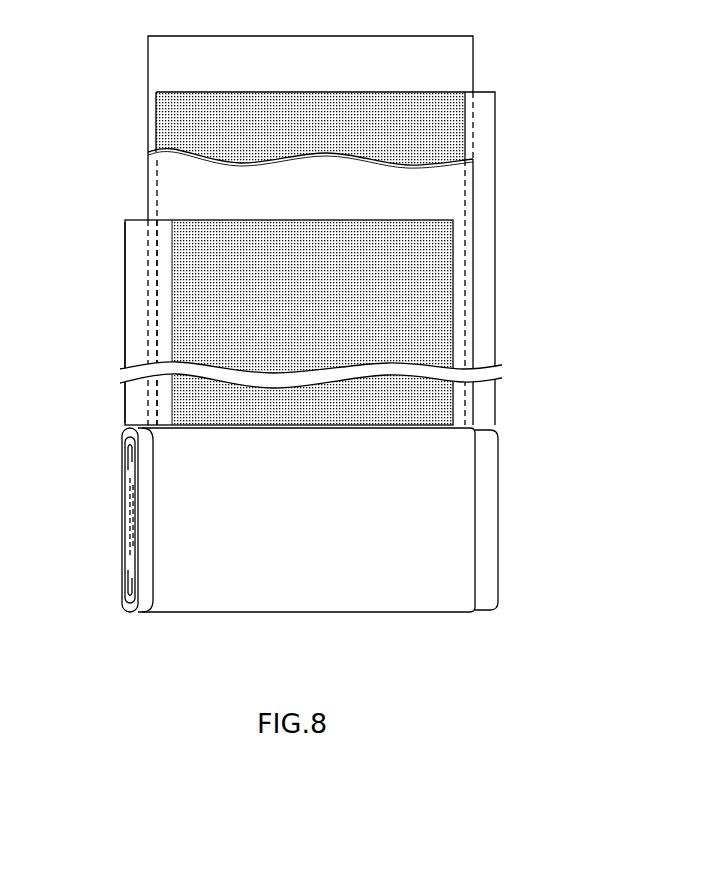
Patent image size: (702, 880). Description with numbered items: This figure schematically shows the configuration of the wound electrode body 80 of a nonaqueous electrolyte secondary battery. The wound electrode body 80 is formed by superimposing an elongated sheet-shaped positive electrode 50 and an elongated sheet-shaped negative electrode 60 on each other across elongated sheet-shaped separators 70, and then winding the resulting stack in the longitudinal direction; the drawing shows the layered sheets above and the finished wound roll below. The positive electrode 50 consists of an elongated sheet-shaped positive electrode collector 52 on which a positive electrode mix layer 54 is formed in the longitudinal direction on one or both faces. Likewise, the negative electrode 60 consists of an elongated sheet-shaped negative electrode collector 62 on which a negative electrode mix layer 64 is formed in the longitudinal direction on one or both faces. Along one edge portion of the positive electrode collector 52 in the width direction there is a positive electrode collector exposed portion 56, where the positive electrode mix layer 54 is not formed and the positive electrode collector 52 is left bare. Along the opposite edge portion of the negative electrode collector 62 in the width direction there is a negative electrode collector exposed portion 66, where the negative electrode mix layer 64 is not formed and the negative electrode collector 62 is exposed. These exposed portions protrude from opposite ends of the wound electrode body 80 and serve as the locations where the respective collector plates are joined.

The positive electrode 50 is at (120, 290).
The positive electrode collector 52 is at (125, 356).
The positive electrode mix layer 54 is at (185, 239).
The positive electrode collector exposed portion 56 is at (140, 323).
The negative electrode 60 is at (500, 166).
The negative electrode collector 62 is at (496, 268).
The negative electrode mix layer 64 is at (462, 115).
The negative electrode collector exposed portion 66 is at (482, 237).
The separator 70 is at (168, 56).
The wound electrode body 80 is at (371, 596).